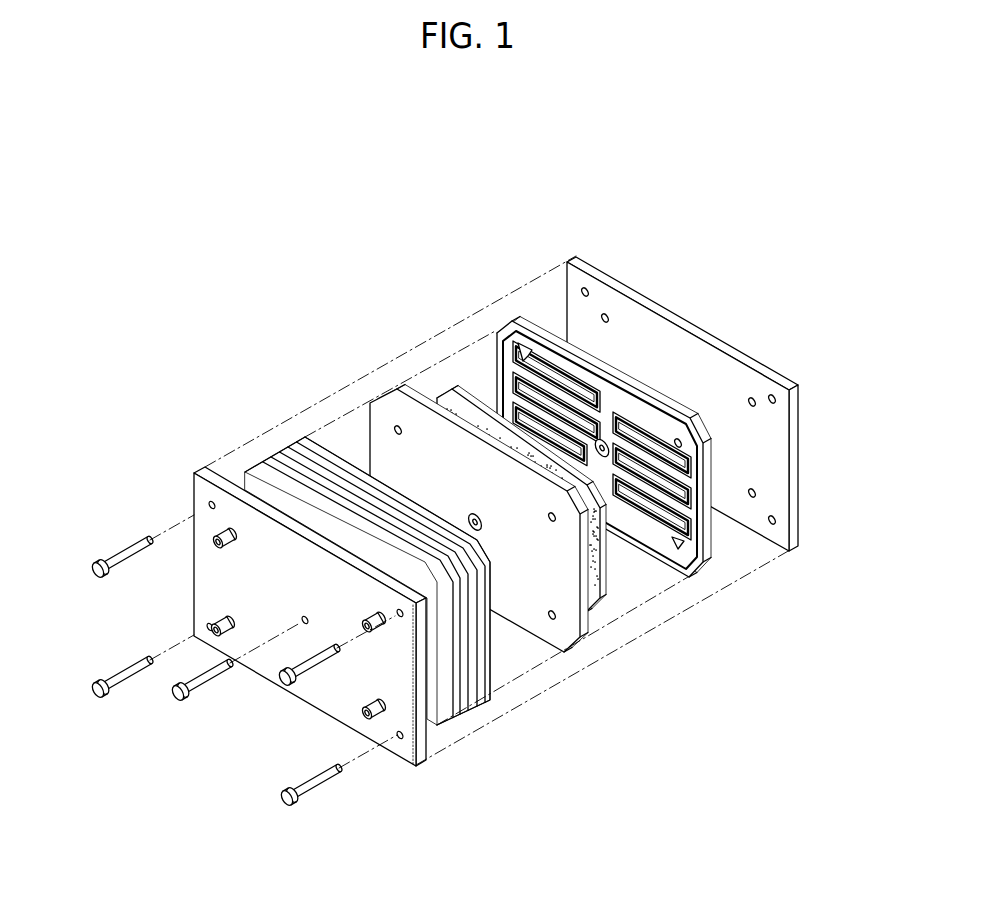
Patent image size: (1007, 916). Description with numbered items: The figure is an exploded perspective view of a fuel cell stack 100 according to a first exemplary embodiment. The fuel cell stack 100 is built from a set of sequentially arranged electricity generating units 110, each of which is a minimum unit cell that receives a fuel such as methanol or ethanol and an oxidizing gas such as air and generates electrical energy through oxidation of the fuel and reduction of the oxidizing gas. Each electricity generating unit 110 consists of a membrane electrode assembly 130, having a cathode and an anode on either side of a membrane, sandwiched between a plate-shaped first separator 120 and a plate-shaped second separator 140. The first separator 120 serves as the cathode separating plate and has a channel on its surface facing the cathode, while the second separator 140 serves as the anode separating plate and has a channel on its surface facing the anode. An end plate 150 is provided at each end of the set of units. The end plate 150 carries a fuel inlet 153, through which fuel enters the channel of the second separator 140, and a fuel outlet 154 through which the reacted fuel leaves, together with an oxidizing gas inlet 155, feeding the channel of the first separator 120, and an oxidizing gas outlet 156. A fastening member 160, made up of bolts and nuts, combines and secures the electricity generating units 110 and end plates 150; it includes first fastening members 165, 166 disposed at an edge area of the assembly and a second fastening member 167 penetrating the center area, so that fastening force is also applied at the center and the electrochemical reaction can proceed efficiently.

The fuel cell stack 100 is at (374, 194).
The electricity generating unit 110 is at (478, 483).
The first separator 120 is at (451, 493).
The membrane electrode assembly 130 is at (458, 392).
The second separator 140 is at (503, 322).
The end plate 150 is at (628, 290).
The fuel inlet 153 is at (214, 538).
The fuel outlet 154 is at (383, 710).
The oxidizing gas inlet 155 is at (383, 622).
The oxidizing gas outlet 156 is at (213, 626).
The fastening member 160 is at (216, 717).
The first fastening member 165 is at (125, 677).
The first fastening member 166 is at (305, 827).
The second fastening member 167 is at (192, 690).